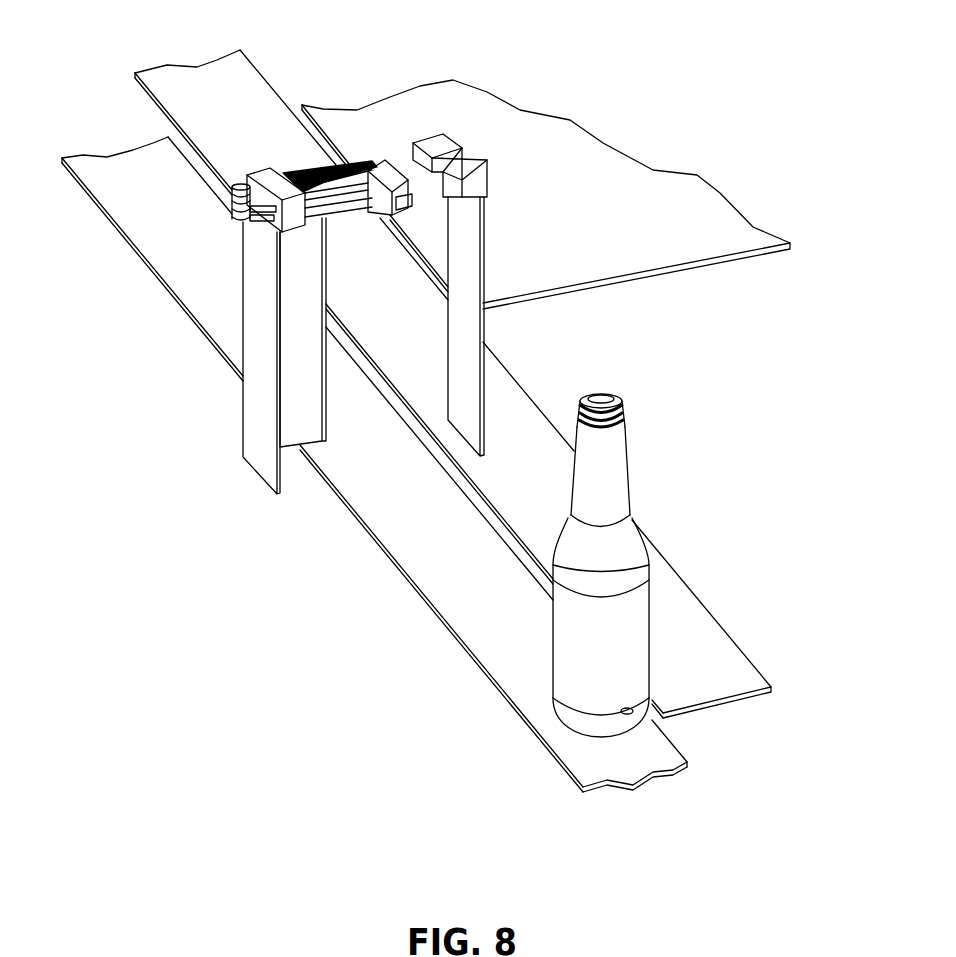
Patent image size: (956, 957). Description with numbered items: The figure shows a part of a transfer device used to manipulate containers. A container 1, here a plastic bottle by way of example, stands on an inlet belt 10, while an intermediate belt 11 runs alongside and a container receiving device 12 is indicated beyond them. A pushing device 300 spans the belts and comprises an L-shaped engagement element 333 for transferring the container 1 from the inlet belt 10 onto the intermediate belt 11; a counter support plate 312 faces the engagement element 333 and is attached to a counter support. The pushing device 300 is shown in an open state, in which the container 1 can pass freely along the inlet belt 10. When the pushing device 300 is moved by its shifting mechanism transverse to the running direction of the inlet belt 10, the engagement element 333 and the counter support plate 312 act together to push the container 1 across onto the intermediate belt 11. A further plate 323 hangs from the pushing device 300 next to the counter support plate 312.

The container 1 is at (615, 462).
The inlet belt 10 is at (680, 743).
The intermediate belt 11 is at (737, 645).
The container receiving device 12 is at (697, 268).
The pushing device 300 is at (336, 314).
The counter support plate 312 is at (487, 172).
The guide plate 323 is at (485, 330).
The L-shaped engagement element 333 is at (232, 372).